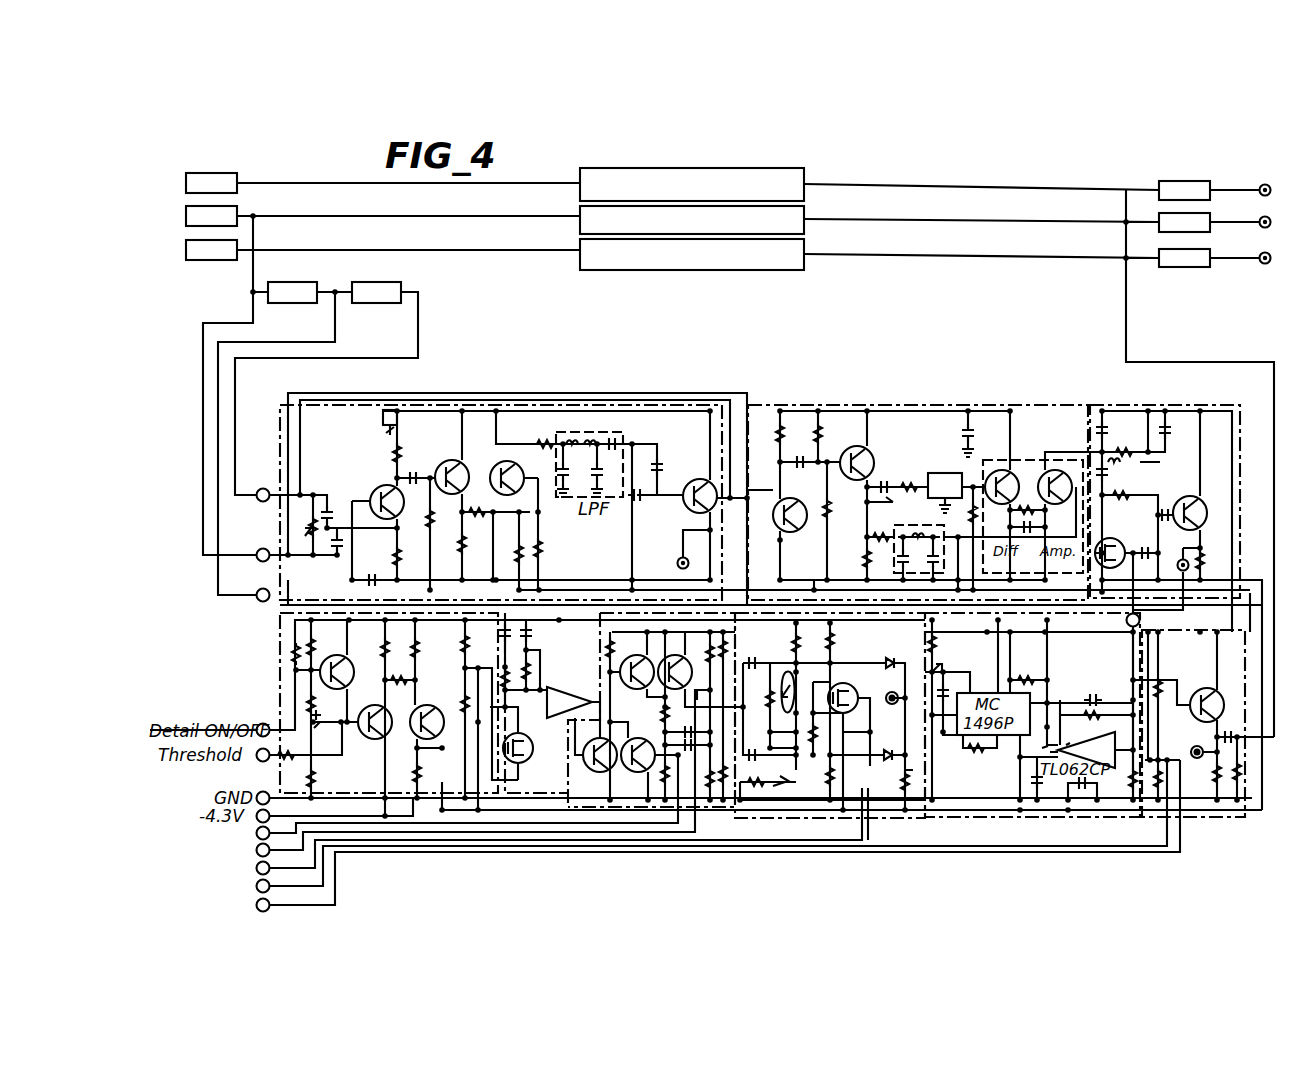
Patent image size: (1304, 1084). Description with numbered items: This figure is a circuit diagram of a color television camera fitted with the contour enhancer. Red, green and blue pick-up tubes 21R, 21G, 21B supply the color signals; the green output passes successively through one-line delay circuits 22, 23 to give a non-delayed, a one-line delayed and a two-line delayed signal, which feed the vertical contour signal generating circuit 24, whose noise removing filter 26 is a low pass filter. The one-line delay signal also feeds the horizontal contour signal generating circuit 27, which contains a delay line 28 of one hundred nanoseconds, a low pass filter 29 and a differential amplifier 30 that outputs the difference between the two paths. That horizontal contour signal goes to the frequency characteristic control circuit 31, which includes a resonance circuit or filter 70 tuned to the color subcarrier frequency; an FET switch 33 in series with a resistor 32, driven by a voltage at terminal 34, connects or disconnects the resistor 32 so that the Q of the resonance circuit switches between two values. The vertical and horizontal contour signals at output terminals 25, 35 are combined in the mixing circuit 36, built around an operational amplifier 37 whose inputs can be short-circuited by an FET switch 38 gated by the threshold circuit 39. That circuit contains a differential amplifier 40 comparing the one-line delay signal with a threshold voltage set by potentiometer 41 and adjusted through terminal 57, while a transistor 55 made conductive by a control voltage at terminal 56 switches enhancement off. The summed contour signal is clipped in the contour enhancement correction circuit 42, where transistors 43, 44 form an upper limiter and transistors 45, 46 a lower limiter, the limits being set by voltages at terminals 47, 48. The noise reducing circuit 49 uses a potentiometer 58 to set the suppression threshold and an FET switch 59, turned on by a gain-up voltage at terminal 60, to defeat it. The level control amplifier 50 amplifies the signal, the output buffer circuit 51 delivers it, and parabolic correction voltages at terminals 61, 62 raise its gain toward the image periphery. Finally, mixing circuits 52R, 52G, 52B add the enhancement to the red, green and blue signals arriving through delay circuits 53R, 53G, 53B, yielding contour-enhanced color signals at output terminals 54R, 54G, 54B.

The red pick-up tube 21R is at (238, 173).
The green pick-up tube 21G is at (238, 206).
The blue pick-up tube 21B is at (212, 260).
The one-line delay circuit 22 is at (303, 272).
The one-line delay circuit 23 is at (372, 282).
The vertical contour signal generating circuit 24 is at (455, 405).
The output terminal 25 is at (678, 558).
The noise removing filter 26 is at (569, 497).
The horizontal contour signal generating circuit 27 is at (800, 405).
The delay line 28 is at (937, 473).
The low pass filter 29 is at (894, 541).
The differential amplifier 30 is at (976, 437).
The frequency characteristic control circuit 31 is at (1106, 405).
The resistor 32 is at (1104, 528).
The FET switch 33 is at (1115, 540).
The terminal 34 is at (1140, 620).
The output terminal 35 is at (1178, 560).
The mixing circuit 36 is at (518, 793).
The operational amplifier 37 is at (575, 686).
The FET switch 38 is at (533, 745).
The threshold circuit 39 is at (280, 633).
The differential amplifier 40 is at (410, 752).
The potentiometer 41 is at (330, 735).
The contour enhancement correction circuit 42 is at (590, 807).
The transistor 43 is at (603, 772).
The transistor 44 is at (648, 770).
The transistor 45 is at (632, 690).
The transistor 46 is at (691, 646).
The terminal 47 is at (257, 836).
The terminal 48 is at (257, 853).
The noise reducing circuit 49 is at (808, 818).
The level control amplifier 50 is at (990, 817).
The output buffer circuit 51 is at (1200, 817).
The mixing circuit 52R is at (1208, 181).
The mixing circuit 52G is at (1210, 214).
The mixing circuit 52B is at (1182, 267).
The delay circuit 53R is at (804, 168).
The delay circuit 53G is at (804, 212).
The delay circuit 53B is at (804, 270).
The output terminal 54R is at (1262, 184).
The output terminal 54G is at (1262, 228).
The output terminal 54B is at (1262, 264).
The transistor 55 is at (352, 660).
The terminal 56 is at (263, 723).
The terminal 57 is at (262, 762).
The potentiometer 58 is at (787, 678).
The FET switch 59 is at (858, 688).
The terminal 60 is at (257, 871).
The terminal 61 is at (257, 889).
The terminal 62 is at (257, 908).
The inductor 70 is at (1142, 469).